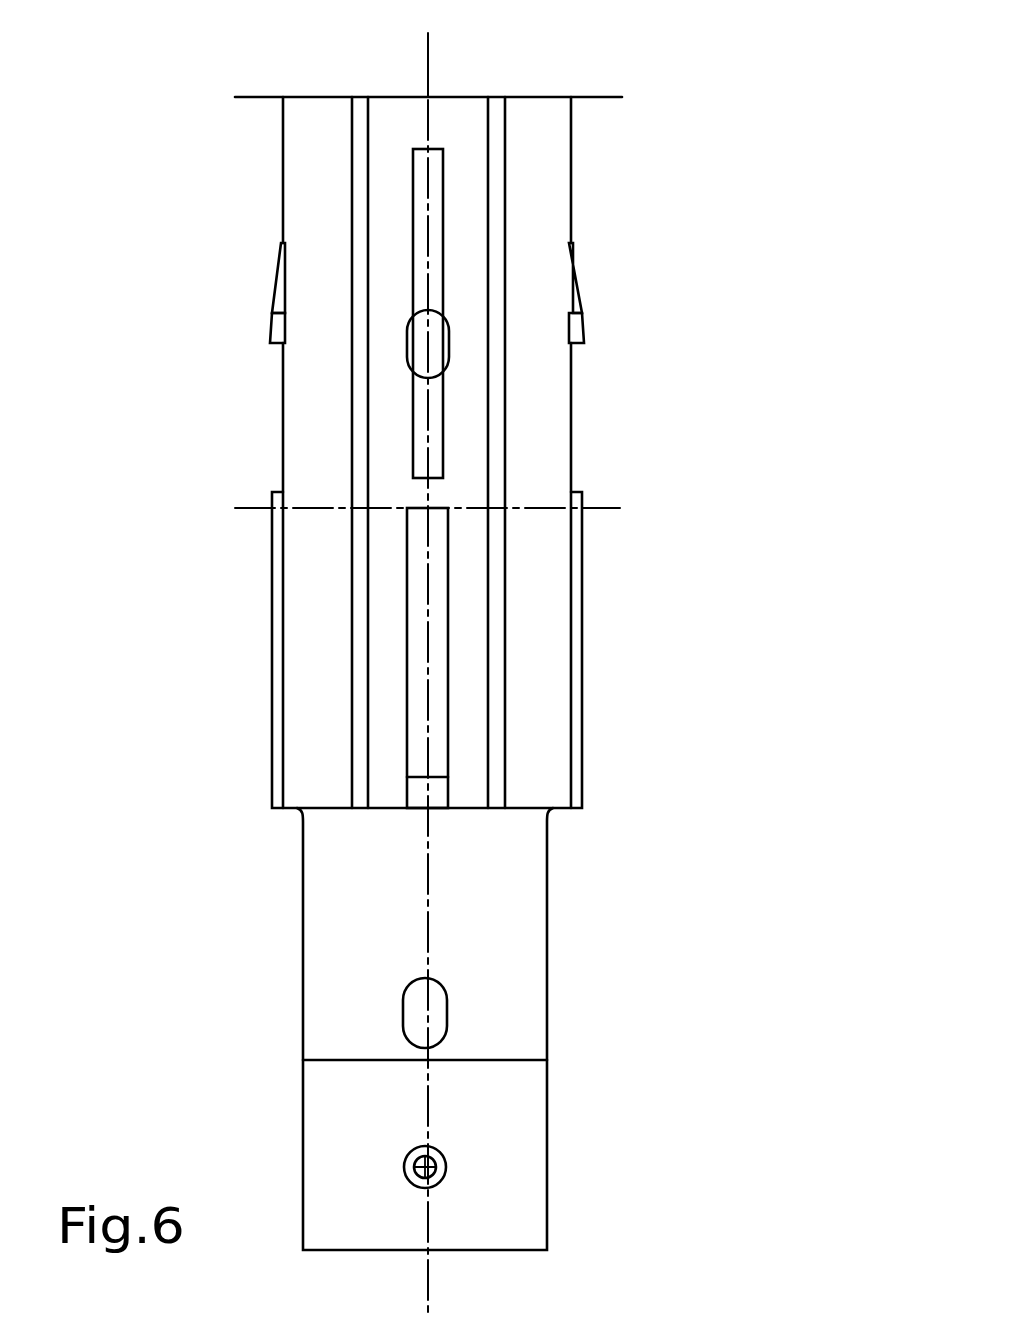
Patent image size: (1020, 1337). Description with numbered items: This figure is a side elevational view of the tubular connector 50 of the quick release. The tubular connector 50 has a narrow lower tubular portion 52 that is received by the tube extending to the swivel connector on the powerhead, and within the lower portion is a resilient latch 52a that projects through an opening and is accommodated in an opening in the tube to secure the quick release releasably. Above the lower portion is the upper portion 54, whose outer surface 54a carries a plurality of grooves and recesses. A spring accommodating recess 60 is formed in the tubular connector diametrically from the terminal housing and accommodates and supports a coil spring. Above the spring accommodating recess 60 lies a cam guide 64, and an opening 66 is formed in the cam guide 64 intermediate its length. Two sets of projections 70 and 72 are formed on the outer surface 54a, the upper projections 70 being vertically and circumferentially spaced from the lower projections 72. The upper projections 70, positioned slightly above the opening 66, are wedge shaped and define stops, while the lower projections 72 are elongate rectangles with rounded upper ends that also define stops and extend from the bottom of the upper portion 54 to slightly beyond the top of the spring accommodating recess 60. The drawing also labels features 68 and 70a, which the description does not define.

The tubular connector 50 is at (240, 238).
The lower tubular portion 52 is at (557, 1026).
The resilient latch 52a is at (440, 1018).
The upper portion 54 is at (623, 400).
The outer surface 54a is at (313, 148).
The spring accommodating recess 60 is at (437, 670).
The cam guide 64 is at (440, 190).
The opening 66 is at (433, 332).
The ribs 68 is at (495, 585).
The upper projections 70 is at (277, 328).
The tab foot 70a is at (276, 345).
The lower projections 72 is at (270, 740).